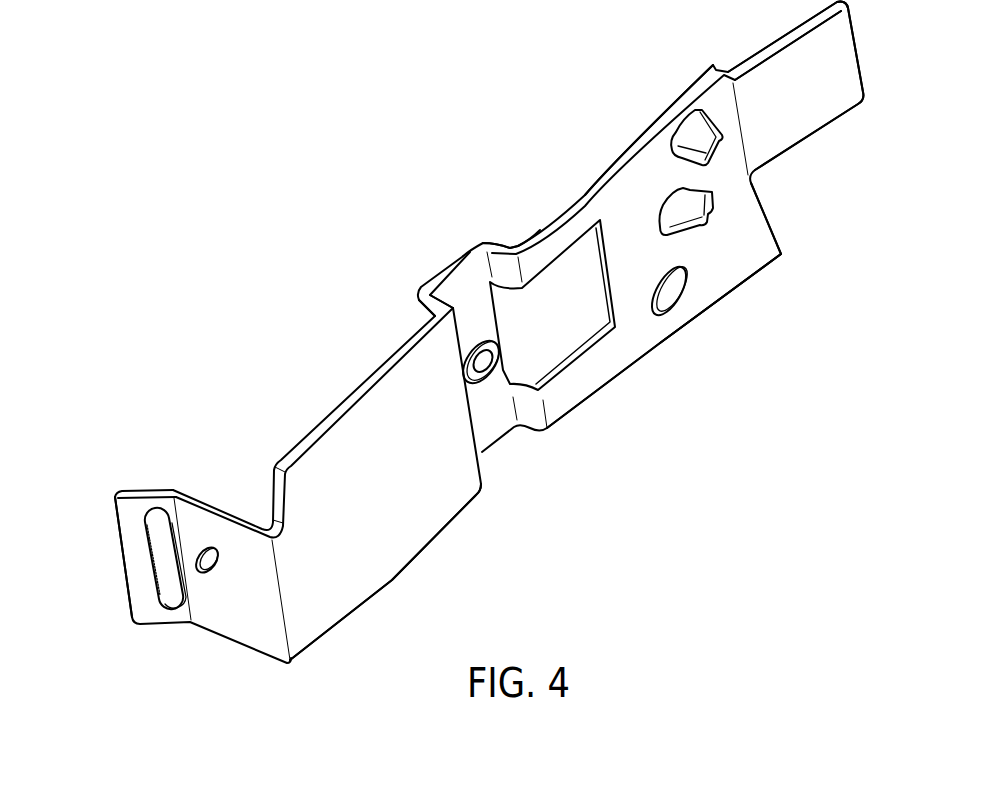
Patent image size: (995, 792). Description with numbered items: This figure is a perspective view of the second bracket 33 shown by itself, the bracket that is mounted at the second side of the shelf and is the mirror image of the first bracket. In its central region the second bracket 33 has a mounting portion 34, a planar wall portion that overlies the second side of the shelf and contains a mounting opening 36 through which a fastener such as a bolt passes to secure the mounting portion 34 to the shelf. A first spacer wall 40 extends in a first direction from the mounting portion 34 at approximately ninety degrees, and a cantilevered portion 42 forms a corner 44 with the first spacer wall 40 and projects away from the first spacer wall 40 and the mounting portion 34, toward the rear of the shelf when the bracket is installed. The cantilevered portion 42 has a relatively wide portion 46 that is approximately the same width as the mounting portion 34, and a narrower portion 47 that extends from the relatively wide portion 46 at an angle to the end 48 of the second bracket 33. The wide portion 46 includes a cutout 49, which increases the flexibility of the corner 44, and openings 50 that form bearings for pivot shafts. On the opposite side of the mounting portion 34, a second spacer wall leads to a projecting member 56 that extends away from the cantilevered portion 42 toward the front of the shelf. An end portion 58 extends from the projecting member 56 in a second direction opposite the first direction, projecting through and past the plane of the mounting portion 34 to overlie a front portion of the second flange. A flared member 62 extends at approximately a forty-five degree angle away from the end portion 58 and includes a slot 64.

The second bracket 33 is at (327, 393).
The mounting portion 34 is at (466, 277).
The mounting opening 36 is at (477, 345).
The first spacer wall 40 is at (500, 243).
The cantilevered portion 42 is at (646, 163).
The corner 44 is at (514, 247).
The relatively wide portion 46 is at (641, 333).
The narrower portion 47 is at (813, 122).
The end 48 is at (860, 53).
The cutout 49 is at (563, 339).
The openings 50 is at (687, 290).
The projecting member 56 is at (405, 545).
The end portion 58 is at (242, 630).
The flared member 62 is at (113, 530).
The slot 64 is at (149, 560).